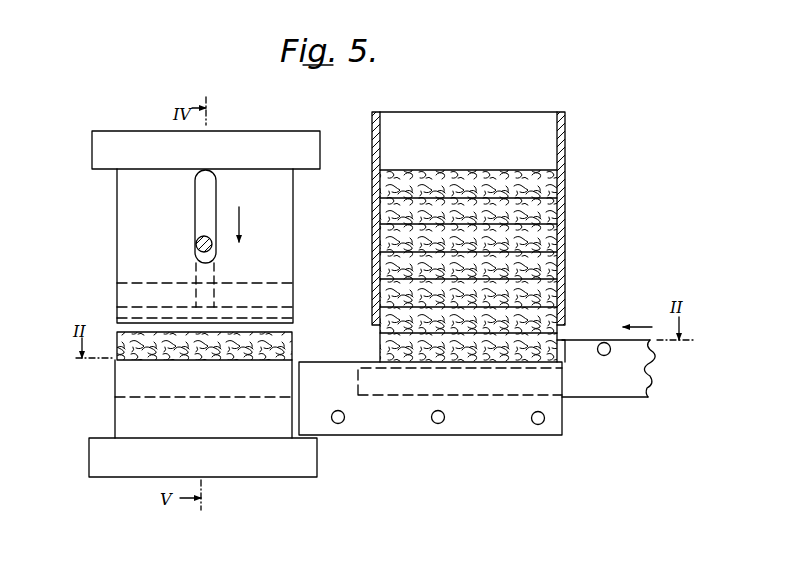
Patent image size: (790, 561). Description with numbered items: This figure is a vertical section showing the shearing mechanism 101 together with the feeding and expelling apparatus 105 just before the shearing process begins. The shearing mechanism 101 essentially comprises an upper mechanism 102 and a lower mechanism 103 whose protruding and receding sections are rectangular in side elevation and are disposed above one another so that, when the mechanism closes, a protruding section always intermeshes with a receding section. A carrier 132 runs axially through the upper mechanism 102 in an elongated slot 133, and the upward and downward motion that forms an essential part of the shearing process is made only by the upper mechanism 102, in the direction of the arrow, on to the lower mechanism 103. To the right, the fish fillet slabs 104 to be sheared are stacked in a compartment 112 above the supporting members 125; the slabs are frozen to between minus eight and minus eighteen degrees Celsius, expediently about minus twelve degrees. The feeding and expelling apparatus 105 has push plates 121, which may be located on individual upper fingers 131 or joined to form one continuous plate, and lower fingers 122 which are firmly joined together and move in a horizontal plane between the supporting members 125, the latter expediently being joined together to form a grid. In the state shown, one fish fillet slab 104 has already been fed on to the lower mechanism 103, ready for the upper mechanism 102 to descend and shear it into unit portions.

The shearing mechanism 101 is at (280, 227).
The upper mechanism 102 is at (135, 198).
The lower mechanism 103 is at (135, 427).
The fish fillet slab 104 is at (125, 347).
The feeding and expelling apparatus 105 is at (622, 378).
The compartment 112 is at (563, 162).
The push plate 121 is at (565, 345).
The lower finger 122 is at (507, 387).
The supporting member 125 is at (408, 417).
The upper finger 131 is at (632, 347).
The carrier 132 is at (197, 245).
The elongated slot 133 is at (200, 152).